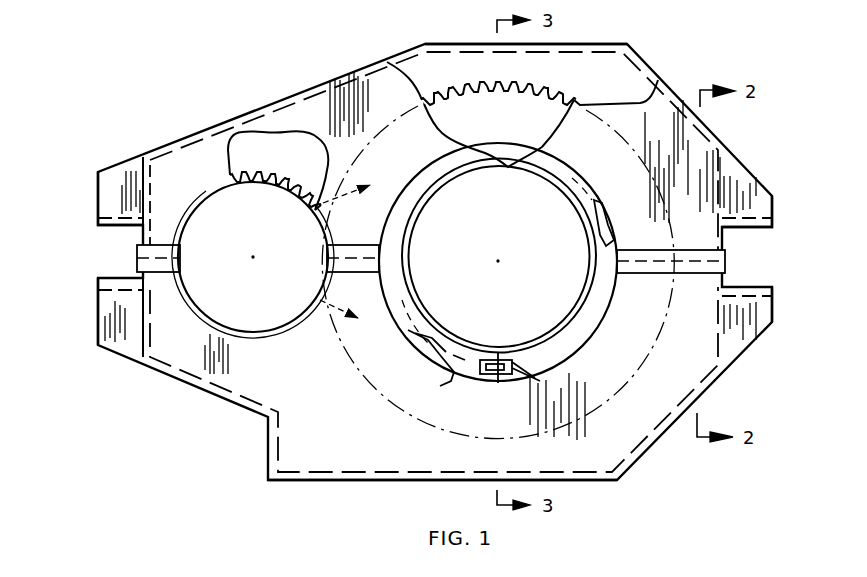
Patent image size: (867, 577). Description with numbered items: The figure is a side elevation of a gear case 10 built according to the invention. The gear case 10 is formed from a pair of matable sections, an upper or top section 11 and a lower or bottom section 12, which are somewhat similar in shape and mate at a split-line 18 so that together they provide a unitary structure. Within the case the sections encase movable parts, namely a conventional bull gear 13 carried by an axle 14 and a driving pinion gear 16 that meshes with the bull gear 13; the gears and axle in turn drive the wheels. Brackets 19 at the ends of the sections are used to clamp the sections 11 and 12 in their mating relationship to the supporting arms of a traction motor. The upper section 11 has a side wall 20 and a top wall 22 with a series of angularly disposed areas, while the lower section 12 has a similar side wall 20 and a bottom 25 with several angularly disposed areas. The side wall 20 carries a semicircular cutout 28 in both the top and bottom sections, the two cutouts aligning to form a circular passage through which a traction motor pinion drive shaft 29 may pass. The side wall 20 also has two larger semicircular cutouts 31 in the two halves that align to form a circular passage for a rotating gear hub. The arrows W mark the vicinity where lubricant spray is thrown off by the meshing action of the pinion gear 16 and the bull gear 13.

The gear case 10 is at (435, 275).
The upper section 11 is at (618, 82).
The lower section 12 is at (368, 462).
The bull gear 13 is at (470, 86).
The axle 14 is at (485, 297).
The driving pinion gear 16 is at (275, 177).
The split-line 18 is at (688, 260).
The brackets 19 is at (108, 203).
The side wall 20 is at (630, 138).
The top wall 22 is at (424, 44).
The bottom 25 is at (580, 483).
The semicircular cutout 28 is at (196, 206).
The traction motor pinion drive shaft 29 is at (284, 261).
The larger semicircular cutouts 31 is at (606, 222).
The arrows W is at (360, 252).